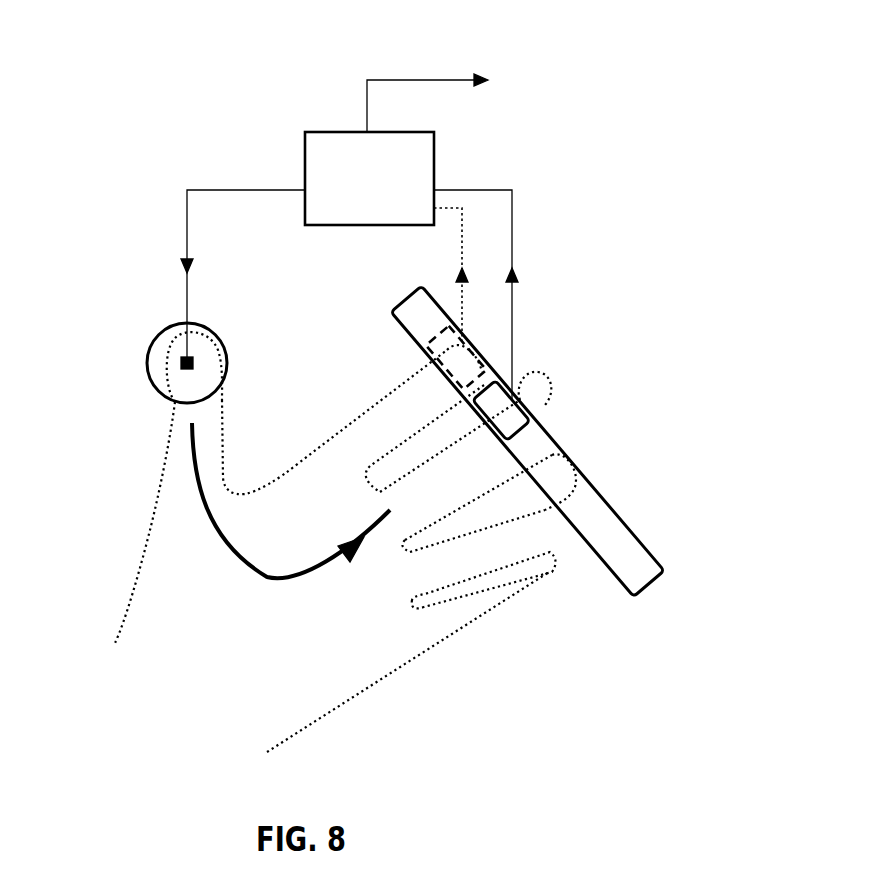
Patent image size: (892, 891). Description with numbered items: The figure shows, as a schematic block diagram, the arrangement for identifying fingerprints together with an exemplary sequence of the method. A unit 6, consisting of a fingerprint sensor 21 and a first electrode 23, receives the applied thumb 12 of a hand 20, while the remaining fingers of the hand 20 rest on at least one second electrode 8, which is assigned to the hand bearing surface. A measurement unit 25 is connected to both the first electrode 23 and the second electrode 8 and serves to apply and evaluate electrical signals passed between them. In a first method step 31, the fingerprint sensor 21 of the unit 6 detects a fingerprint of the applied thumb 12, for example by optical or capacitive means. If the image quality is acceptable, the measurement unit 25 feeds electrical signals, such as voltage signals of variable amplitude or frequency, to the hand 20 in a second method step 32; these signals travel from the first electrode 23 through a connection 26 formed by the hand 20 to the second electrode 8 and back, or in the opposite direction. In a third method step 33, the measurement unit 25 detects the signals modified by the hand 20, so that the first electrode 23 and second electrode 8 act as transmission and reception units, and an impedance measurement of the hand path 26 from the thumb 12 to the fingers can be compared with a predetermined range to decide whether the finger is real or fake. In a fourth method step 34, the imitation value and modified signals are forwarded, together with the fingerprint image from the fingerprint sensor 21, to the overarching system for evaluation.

The unit 6 is at (143, 378).
The second electrode 8 is at (527, 407).
The thumb 12 is at (165, 380).
The hand 20 is at (120, 604).
The fingerprint sensor 21 is at (150, 368).
The first electrode 23 is at (180, 358).
The measurement unit 25 is at (369, 178).
The connection 26 is at (263, 577).
The first method step 31 is at (179, 335).
The second method step 32 is at (185, 264).
The third method step 33 is at (423, 164).
The fourth method step 34 is at (487, 80).